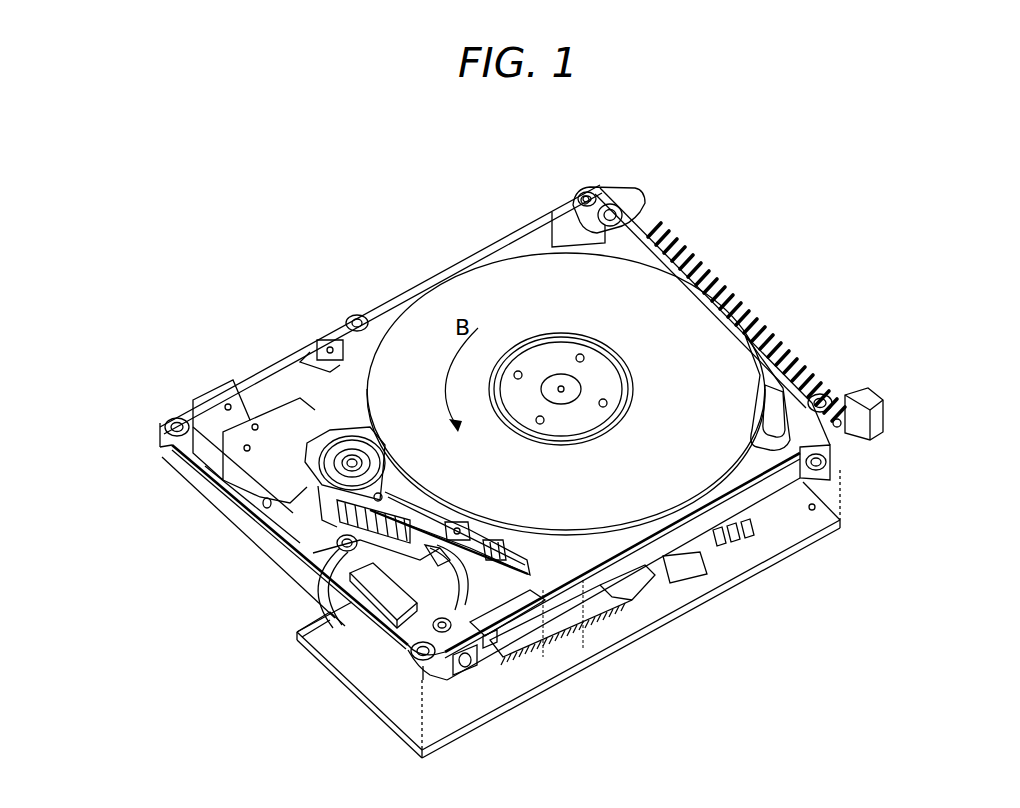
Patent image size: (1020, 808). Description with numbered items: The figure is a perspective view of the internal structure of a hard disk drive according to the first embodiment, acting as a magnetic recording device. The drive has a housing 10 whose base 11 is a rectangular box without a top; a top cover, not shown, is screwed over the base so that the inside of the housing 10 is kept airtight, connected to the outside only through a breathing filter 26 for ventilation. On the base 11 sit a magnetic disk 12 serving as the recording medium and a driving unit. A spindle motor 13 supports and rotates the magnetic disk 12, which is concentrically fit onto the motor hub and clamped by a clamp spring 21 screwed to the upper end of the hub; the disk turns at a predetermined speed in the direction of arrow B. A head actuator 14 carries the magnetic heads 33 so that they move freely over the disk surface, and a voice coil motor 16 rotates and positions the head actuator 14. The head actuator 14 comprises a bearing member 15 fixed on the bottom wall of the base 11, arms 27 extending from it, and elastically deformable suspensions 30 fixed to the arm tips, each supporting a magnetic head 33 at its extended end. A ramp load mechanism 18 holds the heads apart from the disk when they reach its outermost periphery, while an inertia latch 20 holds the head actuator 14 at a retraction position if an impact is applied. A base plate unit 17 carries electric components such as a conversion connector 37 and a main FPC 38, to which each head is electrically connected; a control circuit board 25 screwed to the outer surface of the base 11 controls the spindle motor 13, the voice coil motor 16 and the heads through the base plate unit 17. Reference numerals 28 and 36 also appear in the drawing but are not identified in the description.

The housing 10 is at (541, 205).
The base 11 is at (488, 605).
The magnetic disk 12 is at (483, 267).
The spindle motor 13 is at (642, 384).
The head actuator 14 is at (397, 480).
The bearing member 15 is at (380, 447).
The voice coil motor 16 is at (281, 398).
The base plate unit 17 is at (338, 568).
The ramp load mechanism 18 is at (600, 600).
The inertia latch 20 is at (310, 350).
The clamp spring 21 is at (580, 340).
The control circuit board 25 is at (663, 597).
The breathing filter 26 is at (770, 443).
The arm 27 is at (457, 522).
The latch 28 is at (578, 237).
The suspension 30 is at (500, 540).
The magnetic head 33 is at (557, 640).
The electronic component 36 is at (407, 622).
The conversion connector 37 is at (333, 657).
The main FPC 38 is at (433, 553).